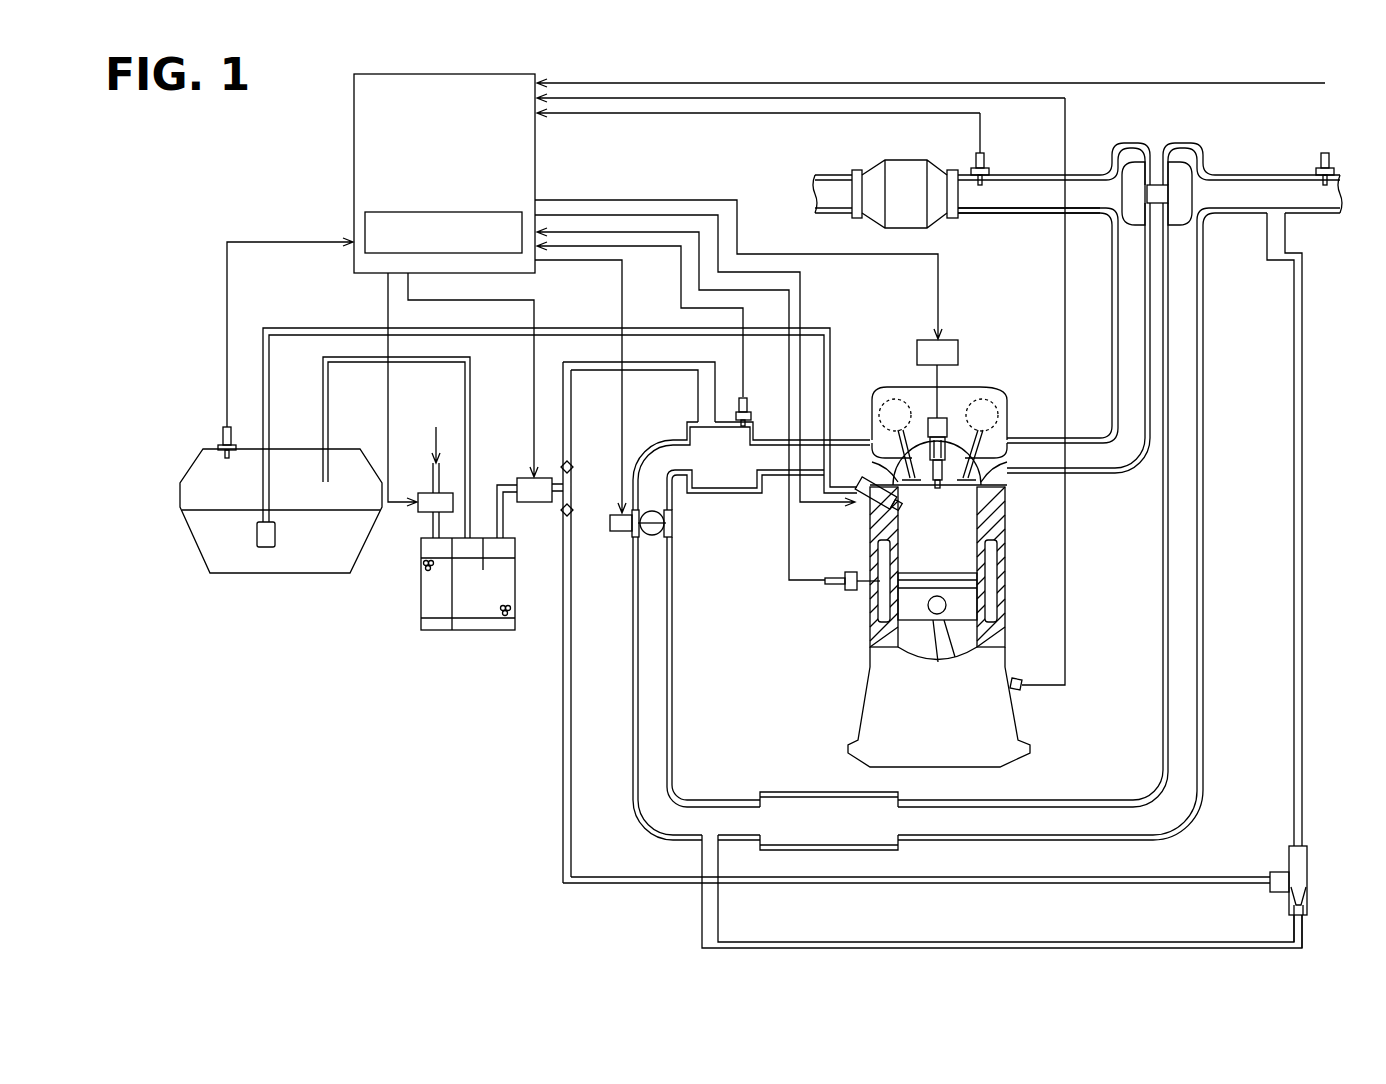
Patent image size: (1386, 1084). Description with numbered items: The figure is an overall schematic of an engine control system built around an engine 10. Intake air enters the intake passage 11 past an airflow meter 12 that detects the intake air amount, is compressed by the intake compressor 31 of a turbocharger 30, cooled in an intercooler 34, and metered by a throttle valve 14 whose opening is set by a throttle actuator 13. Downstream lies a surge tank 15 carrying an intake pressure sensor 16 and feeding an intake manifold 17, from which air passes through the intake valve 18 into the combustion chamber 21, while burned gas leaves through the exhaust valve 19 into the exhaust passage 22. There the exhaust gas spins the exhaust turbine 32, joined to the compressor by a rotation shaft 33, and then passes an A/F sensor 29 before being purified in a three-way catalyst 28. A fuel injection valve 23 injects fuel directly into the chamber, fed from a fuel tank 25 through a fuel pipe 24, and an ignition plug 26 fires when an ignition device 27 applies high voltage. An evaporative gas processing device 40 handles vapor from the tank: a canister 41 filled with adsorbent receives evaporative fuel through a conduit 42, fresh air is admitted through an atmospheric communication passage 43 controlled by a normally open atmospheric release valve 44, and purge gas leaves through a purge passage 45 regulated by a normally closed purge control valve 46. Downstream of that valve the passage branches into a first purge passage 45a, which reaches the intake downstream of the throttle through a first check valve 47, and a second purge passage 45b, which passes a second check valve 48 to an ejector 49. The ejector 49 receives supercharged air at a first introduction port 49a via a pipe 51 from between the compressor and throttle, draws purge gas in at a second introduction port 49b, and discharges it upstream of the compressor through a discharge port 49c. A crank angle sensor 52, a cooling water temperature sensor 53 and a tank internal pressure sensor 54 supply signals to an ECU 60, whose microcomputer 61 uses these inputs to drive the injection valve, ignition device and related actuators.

The engine 10 is at (987, 553).
The intake passage 11 is at (1207, 590).
The airflow meter 12 is at (1330, 167).
The throttle actuator 13 is at (618, 533).
The throttle valve 14 is at (655, 537).
The surge tank 15 is at (740, 494).
The intake pressure sensor 16 is at (752, 410).
The intake manifold 17 is at (851, 437).
The intake valve 18 is at (876, 398).
The exhaust valve 19 is at (1007, 457).
The combustion chamber 21 is at (960, 520).
The exhaust passage 22 is at (1105, 470).
The fuel injection valve 23 is at (872, 503).
The fuel pipe 24 is at (651, 326).
The fuel tank 25 is at (198, 549).
The ignition plug 26 is at (987, 392).
The ignition device 27 is at (960, 353).
The catalyst 28 is at (902, 160).
The A/F sensor 29 is at (986, 163).
The turbocharger 30 is at (1167, 155).
The intake compressor 31 is at (1210, 166).
The exhaust turbine 32 is at (1105, 168).
The rotation shaft 33 is at (1157, 183).
The intercooler 34 is at (779, 791).
The evaporative gas processing device 40 is at (486, 622).
The canister 41 is at (516, 587).
The conduit 42 is at (472, 367).
The atmospheric communication passage 43 is at (431, 524).
The atmospheric release valve 44 is at (416, 492).
The purge passage 45 is at (504, 522).
The first purge passage 45a is at (651, 373).
The second purge passage 45b is at (562, 826).
The purge control valve 46 is at (516, 477).
The first check valve 47 is at (572, 466).
The second check valve 48 is at (572, 513).
The ejector 49 is at (1284, 589).
The first introduction port 49a is at (1298, 918).
The second introduction port 49b is at (1270, 871).
The discharge port 49c is at (1302, 845).
The pipe 51 is at (700, 926).
The crank angle sensor 52 is at (1020, 680).
The cooling water temperature sensor 53 is at (853, 592).
The tank internal pressure sensor 54 is at (222, 432).
The ECU 60 is at (537, 150).
The microcomputer 61 is at (498, 210).